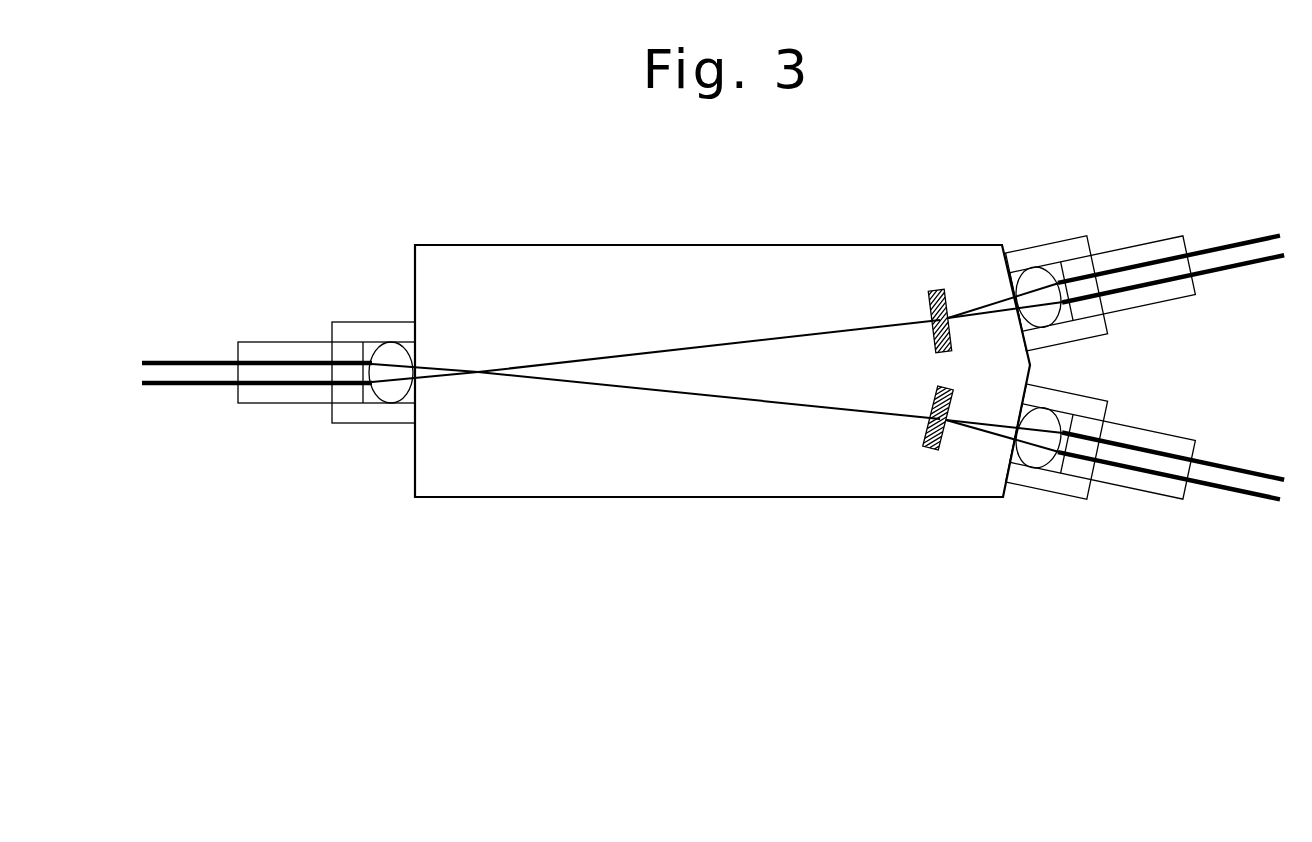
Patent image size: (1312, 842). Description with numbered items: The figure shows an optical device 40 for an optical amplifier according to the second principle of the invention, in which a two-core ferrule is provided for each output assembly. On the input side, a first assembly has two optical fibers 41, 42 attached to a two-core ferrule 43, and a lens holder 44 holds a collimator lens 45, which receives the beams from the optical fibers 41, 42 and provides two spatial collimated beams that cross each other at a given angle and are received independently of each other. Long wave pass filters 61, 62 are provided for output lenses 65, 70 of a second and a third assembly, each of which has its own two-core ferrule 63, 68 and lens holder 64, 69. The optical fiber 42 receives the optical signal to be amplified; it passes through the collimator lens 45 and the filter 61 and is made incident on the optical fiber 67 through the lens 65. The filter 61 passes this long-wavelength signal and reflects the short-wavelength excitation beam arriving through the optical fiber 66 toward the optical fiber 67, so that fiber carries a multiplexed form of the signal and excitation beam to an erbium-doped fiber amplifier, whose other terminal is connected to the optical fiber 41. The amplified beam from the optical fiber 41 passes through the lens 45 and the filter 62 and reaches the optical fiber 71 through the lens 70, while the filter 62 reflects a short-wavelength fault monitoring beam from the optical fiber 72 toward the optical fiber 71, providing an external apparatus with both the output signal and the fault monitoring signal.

The optical device 40 is at (918, 243).
The optical fiber 41 is at (180, 357).
The optical fiber 42 is at (175, 388).
The two-core ferrule 43 is at (266, 340).
The lens holder 44 is at (355, 320).
The collimator lens 45 is at (415, 356).
The long wave pass filter 61 is at (928, 297).
The long wave pass filter 62 is at (935, 388).
The two-core ferrule 63 is at (1152, 240).
The lens holder 64 is at (1055, 240).
The output lens 65 is at (1027, 318).
The optical fiber 66 is at (1248, 237).
The optical fiber 67 is at (1248, 262).
The two-core ferrule 68 is at (1148, 497).
The lens holder 69 is at (1043, 495).
The output lens 70 is at (1020, 450).
The optical fiber 71 is at (1258, 470).
The optical fiber 72 is at (1250, 505).